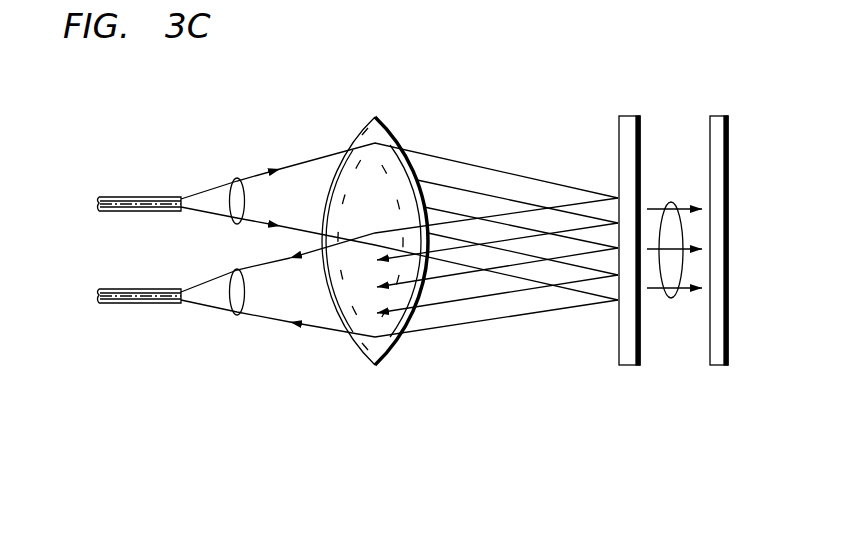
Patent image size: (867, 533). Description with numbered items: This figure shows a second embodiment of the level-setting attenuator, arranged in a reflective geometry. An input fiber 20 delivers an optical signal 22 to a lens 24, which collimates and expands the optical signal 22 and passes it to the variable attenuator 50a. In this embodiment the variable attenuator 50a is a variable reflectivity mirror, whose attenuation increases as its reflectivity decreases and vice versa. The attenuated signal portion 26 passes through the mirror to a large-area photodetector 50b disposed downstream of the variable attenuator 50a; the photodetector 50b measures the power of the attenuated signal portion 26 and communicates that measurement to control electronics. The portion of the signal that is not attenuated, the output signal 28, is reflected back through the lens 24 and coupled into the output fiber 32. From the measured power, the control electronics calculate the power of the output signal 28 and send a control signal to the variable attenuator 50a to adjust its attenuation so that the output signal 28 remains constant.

The input fiber 20 is at (120, 196).
The optical signal 22 is at (238, 177).
The lens 24 is at (380, 132).
The attenuated signal portion 26 is at (670, 300).
The output signal 28 is at (236, 316).
The output fiber 32 is at (120, 288).
The variable attenuator 50a is at (632, 115).
The photodetector 50b is at (718, 115).